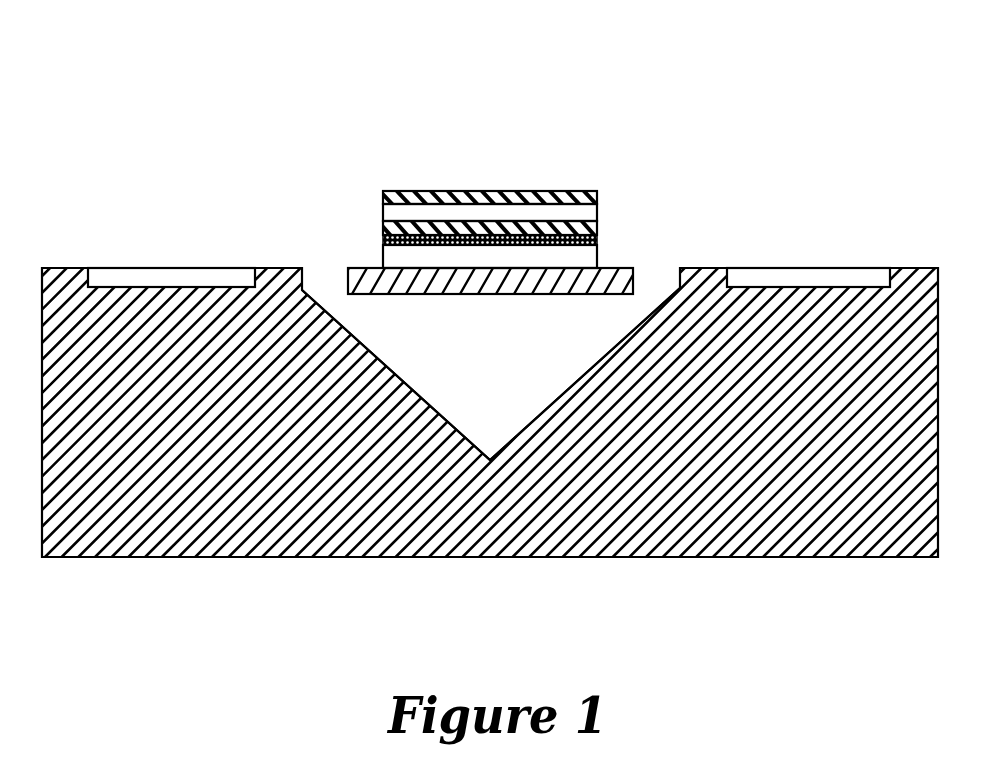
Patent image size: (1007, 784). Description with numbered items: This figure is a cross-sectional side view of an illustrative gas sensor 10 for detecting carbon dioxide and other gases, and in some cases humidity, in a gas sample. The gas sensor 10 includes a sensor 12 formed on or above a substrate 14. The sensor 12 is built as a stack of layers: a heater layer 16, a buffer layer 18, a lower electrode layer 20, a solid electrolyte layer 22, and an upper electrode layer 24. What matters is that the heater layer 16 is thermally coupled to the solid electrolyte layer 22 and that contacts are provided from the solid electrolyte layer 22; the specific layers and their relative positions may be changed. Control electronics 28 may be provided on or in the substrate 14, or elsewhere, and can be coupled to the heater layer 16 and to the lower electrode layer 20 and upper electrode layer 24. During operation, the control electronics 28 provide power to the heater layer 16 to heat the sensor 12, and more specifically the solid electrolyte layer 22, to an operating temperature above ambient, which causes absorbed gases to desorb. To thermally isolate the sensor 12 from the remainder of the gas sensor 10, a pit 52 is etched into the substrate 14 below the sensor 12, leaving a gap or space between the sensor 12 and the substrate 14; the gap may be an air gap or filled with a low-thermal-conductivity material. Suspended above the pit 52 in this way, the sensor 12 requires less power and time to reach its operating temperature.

The gas sensor 10 is at (503, 309).
The sensor 12 is at (510, 142).
The substrate 14 is at (780, 540).
The heater layer 16 is at (597, 257).
The buffer layer 18 is at (597, 238).
The lower electrode layer 20 is at (597, 224).
The solid electrolyte layer 22 is at (385, 212).
The upper electrode layer 24 is at (410, 200).
The control electronics 28 is at (168, 278).
The pit 52 is at (470, 367).